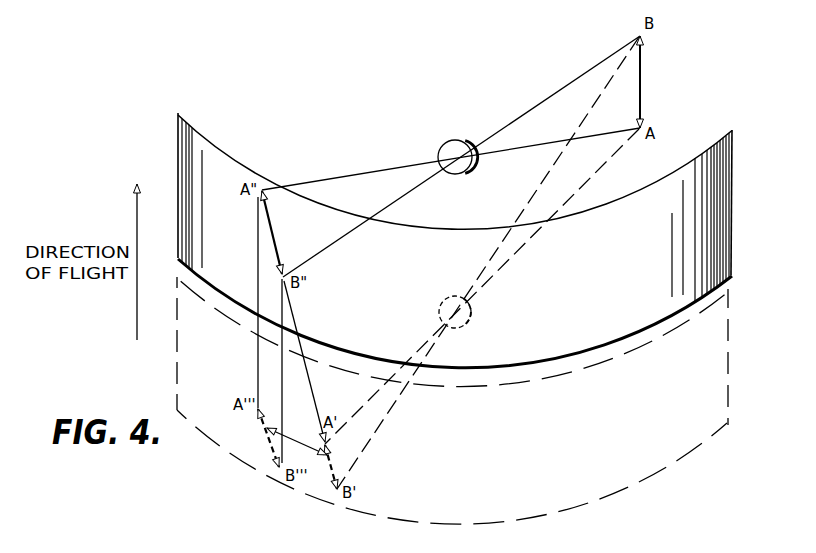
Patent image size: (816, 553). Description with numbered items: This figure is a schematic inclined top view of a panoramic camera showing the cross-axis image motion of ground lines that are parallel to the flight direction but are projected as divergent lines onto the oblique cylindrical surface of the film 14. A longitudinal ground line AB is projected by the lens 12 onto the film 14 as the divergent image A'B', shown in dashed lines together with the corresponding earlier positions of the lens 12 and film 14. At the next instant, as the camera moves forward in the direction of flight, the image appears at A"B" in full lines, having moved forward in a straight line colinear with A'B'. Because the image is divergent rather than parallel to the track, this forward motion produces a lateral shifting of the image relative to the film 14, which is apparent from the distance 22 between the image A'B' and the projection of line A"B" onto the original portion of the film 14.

The lens 12 is at (452, 140).
The film 14 is at (723, 245).
The distance 22 is at (298, 445).